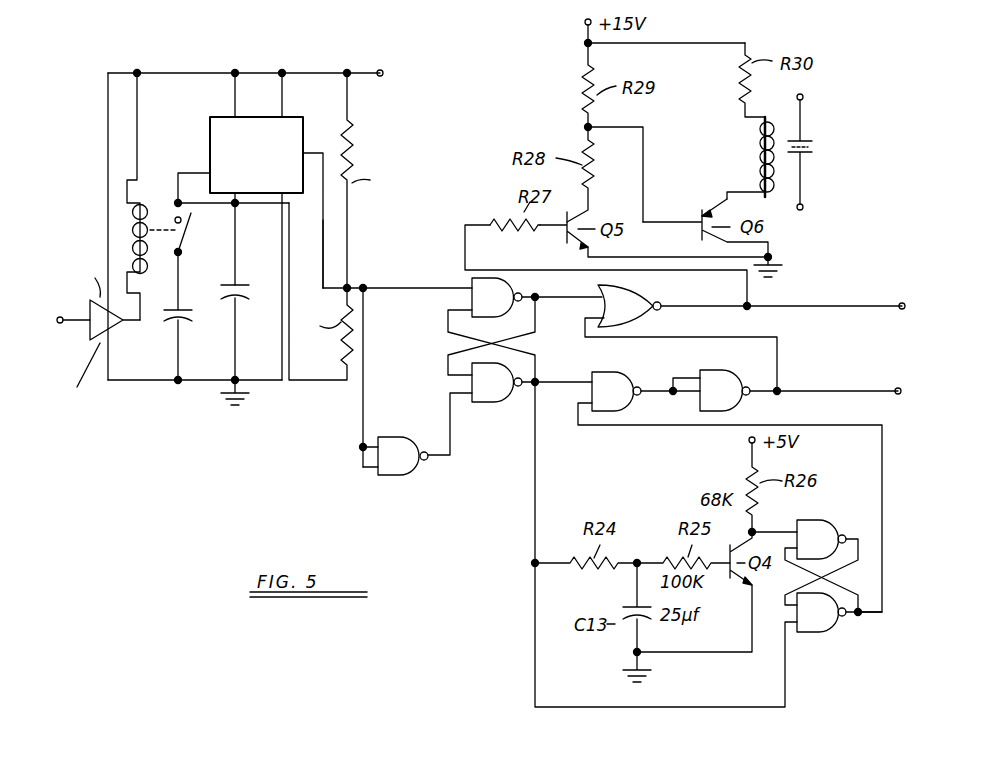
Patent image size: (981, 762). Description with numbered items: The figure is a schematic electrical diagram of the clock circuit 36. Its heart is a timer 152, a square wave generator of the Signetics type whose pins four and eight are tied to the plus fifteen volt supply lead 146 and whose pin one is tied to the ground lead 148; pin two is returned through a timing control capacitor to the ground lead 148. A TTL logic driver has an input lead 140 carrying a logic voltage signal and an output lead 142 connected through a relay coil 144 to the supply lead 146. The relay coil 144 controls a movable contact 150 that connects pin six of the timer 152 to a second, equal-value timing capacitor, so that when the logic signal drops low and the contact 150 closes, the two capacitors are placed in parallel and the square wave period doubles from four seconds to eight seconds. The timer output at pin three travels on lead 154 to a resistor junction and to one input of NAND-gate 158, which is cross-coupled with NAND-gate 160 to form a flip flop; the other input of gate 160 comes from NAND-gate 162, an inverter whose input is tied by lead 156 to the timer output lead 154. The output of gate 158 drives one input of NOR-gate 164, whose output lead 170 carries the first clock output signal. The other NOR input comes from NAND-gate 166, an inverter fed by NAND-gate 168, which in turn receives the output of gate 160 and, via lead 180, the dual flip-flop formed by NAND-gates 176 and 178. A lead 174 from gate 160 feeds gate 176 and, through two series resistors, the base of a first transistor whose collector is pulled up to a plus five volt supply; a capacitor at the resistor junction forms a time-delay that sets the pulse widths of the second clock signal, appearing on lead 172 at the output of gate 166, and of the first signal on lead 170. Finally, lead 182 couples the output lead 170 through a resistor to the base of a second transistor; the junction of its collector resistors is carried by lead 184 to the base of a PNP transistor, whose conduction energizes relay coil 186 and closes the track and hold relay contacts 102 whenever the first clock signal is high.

The clock circuit 36 is at (261, 298).
The track and hold relay contacts 102 is at (815, 147).
The input lead 140 is at (76, 325).
The output lead 142 is at (143, 322).
The relay coil 144 is at (157, 205).
The voltage supply lead 146 is at (158, 77).
The ground lead 148 is at (168, 383).
The movable contact 150 is at (184, 240).
The timer 152 is at (262, 203).
The timer output lead 154 is at (320, 232).
The lead 156 is at (365, 381).
The NAND-gate 158 is at (498, 289).
The NAND-gate 160 is at (497, 393).
The NAND-gate 162 is at (398, 478).
The NOR-gate 164 is at (646, 295).
The NAND-gate 166 is at (712, 381).
The NAND-gate 168 is at (612, 384).
The output lead 170 is at (808, 305).
The lead 172 is at (830, 388).
The lead 174 is at (535, 518).
The NAND-gate 176 is at (818, 635).
The NAND-gate 178 is at (812, 530).
The lead 180 is at (883, 520).
The lead 182 is at (465, 251).
The lead 184 is at (645, 161).
The relay coil 186 is at (758, 150).